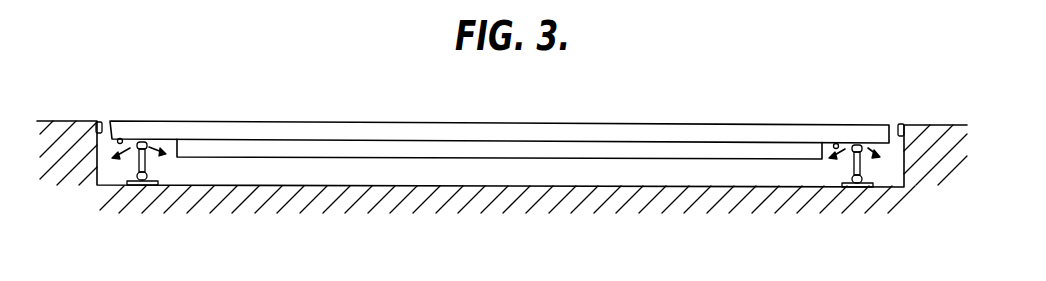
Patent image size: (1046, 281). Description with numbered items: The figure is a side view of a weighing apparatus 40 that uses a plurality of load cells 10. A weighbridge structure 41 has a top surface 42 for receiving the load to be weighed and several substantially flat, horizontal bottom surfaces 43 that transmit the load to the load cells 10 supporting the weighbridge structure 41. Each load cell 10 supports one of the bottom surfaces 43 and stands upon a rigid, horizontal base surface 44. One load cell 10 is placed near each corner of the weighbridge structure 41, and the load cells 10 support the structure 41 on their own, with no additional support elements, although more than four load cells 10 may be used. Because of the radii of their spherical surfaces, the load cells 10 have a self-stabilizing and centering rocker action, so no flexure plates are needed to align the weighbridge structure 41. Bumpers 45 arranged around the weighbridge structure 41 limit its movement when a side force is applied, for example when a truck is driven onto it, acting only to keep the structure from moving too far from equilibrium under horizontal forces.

The load cell 10 is at (146, 166).
The weighing apparatus 40 is at (499, 106).
The weighbridge structure 41 is at (722, 131).
The top surface 42 is at (618, 122).
The bottom surface 43 is at (119, 138).
The base surface 44 is at (157, 186).
The bumper 45 is at (99, 121).